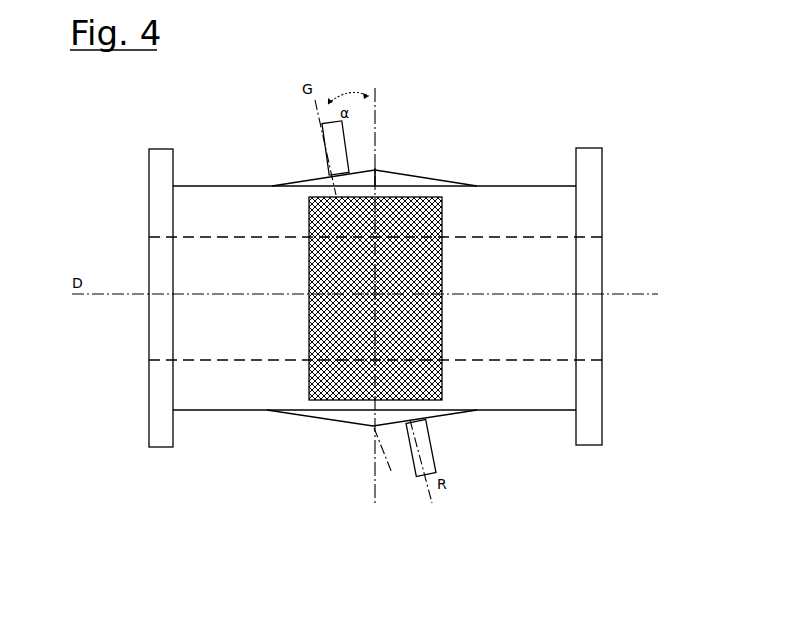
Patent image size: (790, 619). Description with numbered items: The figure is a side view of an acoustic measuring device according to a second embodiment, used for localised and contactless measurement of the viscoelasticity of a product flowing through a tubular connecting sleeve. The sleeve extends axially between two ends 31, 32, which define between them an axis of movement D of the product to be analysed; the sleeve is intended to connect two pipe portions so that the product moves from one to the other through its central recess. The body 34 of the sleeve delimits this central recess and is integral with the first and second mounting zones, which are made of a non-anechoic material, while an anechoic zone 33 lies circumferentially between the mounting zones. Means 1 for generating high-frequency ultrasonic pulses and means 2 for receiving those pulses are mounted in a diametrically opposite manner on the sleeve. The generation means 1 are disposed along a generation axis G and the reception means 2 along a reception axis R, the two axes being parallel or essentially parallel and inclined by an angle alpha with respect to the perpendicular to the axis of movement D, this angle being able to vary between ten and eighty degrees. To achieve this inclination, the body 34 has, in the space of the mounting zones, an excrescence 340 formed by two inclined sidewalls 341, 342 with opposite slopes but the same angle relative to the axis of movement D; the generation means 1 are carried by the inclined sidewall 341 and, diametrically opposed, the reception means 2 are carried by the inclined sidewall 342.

The generation means 1 is at (313, 130).
The reception means 2 is at (440, 452).
The end 31 is at (143, 250).
The end 32 is at (607, 240).
The anechoic zone 33 is at (428, 198).
The body 34 is at (511, 208).
The excrescence 340 is at (378, 167).
The inclined sidewall 341 is at (308, 178).
The inclined sidewall 342 is at (443, 178).